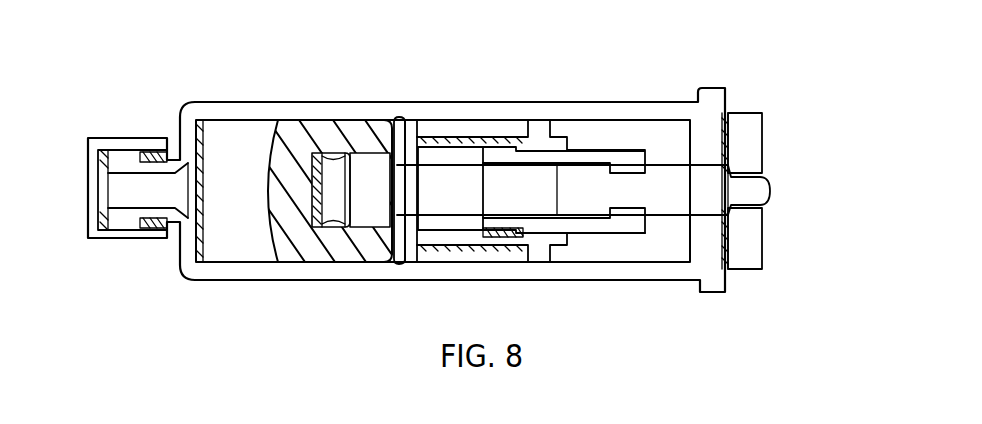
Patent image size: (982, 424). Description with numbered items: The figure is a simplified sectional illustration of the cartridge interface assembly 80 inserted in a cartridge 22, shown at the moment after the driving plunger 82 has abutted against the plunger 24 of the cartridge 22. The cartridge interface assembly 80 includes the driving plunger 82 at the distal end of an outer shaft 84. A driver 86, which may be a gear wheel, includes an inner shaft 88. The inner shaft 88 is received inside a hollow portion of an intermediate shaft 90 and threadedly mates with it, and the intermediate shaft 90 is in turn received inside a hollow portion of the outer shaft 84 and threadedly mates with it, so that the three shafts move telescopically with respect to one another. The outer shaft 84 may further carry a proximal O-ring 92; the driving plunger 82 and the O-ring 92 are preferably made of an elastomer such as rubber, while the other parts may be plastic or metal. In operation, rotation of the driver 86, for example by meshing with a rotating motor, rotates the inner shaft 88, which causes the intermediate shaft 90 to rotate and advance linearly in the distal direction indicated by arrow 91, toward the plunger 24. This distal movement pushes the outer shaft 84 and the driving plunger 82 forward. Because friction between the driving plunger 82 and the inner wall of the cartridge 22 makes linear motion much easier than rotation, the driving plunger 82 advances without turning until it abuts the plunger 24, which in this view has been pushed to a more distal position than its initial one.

The cartridge 22 is at (250, 108).
The plunger 24 is at (363, 140).
The cartridge interface assembly 80 is at (773, 278).
The driving plunger 82 is at (397, 117).
The outer shaft 84 is at (449, 125).
The driver 86 is at (760, 130).
The inner shaft 88 is at (675, 198).
The intermediate shaft 90 is at (595, 222).
The arrow 91 is at (563, 58).
The proximal O-ring 92 is at (531, 122).